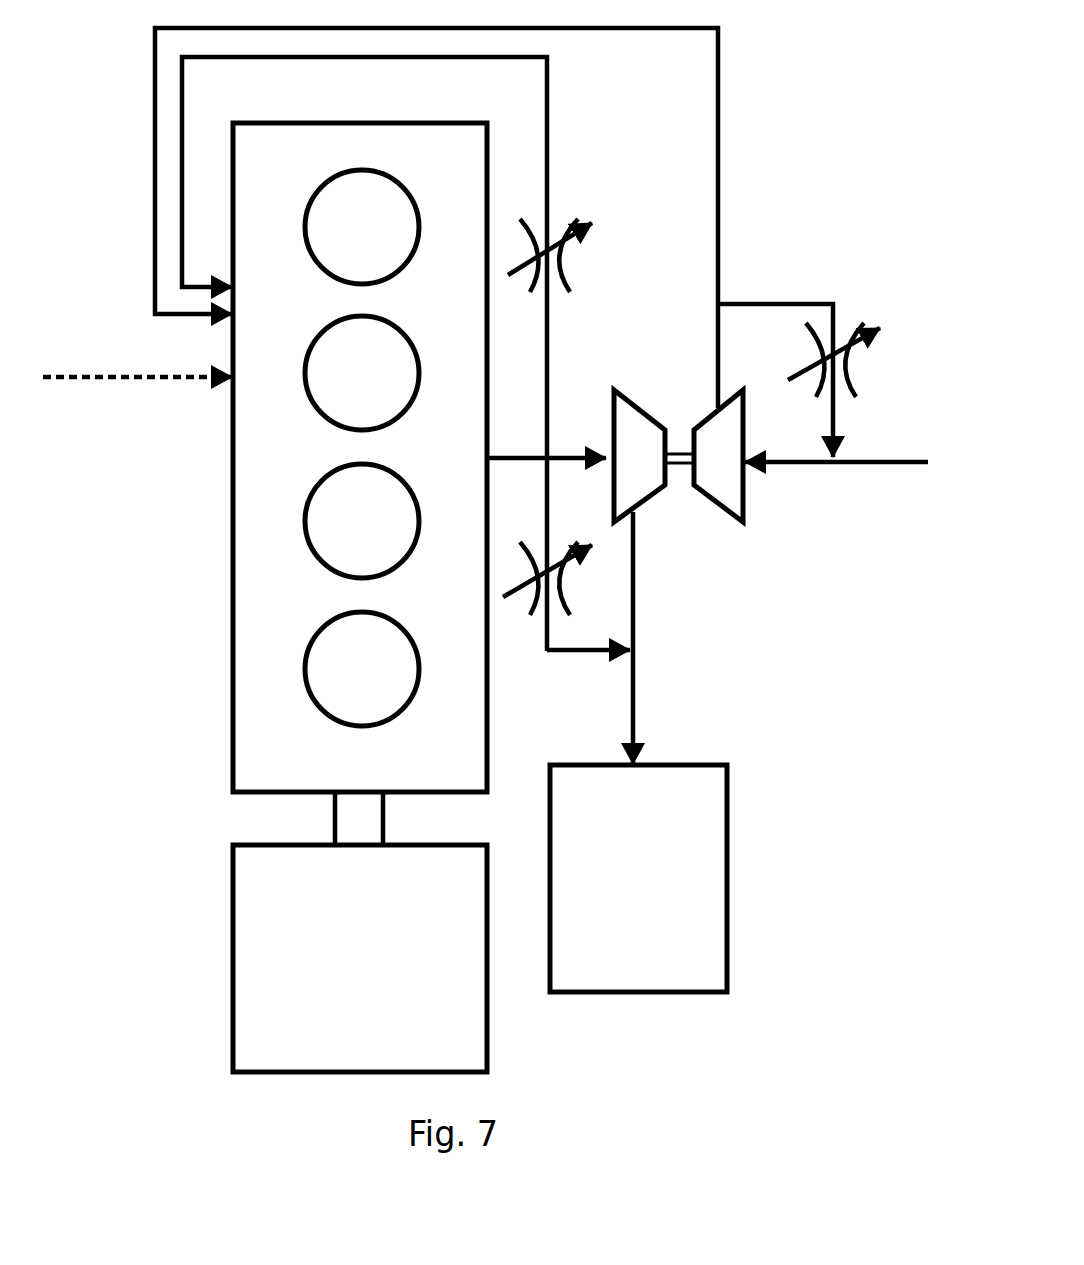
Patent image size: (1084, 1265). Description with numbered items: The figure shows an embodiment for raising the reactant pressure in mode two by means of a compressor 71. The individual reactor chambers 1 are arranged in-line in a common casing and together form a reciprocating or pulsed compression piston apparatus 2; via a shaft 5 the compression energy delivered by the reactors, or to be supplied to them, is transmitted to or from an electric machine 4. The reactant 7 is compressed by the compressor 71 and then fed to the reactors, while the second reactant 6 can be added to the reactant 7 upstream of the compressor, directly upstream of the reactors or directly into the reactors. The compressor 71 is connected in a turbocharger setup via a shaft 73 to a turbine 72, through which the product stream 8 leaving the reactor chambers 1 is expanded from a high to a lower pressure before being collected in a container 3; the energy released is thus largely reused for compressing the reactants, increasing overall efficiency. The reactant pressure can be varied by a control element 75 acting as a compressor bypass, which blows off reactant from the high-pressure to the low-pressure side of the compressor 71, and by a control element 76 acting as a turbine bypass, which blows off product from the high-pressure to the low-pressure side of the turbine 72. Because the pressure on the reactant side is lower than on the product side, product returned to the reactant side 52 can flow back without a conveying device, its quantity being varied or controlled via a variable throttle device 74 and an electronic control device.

The reactor chambers 1 is at (385, 228).
The reciprocating compression piston apparatus 2 is at (333, 758).
The container 3 is at (638, 878).
The electric machine 4 is at (418, 992).
The shaft 5 is at (368, 818).
The second reactant 6 is at (137, 346).
The reactant 7 is at (557, 252).
The product stream 8 is at (632, 682).
The product returned to the reactant side 52 is at (406, 354).
The compressor 71 is at (745, 483).
The turbine 72 is at (630, 510).
The shaft 73 is at (680, 467).
The variable throttle device 74 is at (573, 255).
The control element (compressor bypass) 75 is at (850, 360).
The control element (turbine bypass) 76 is at (568, 570).